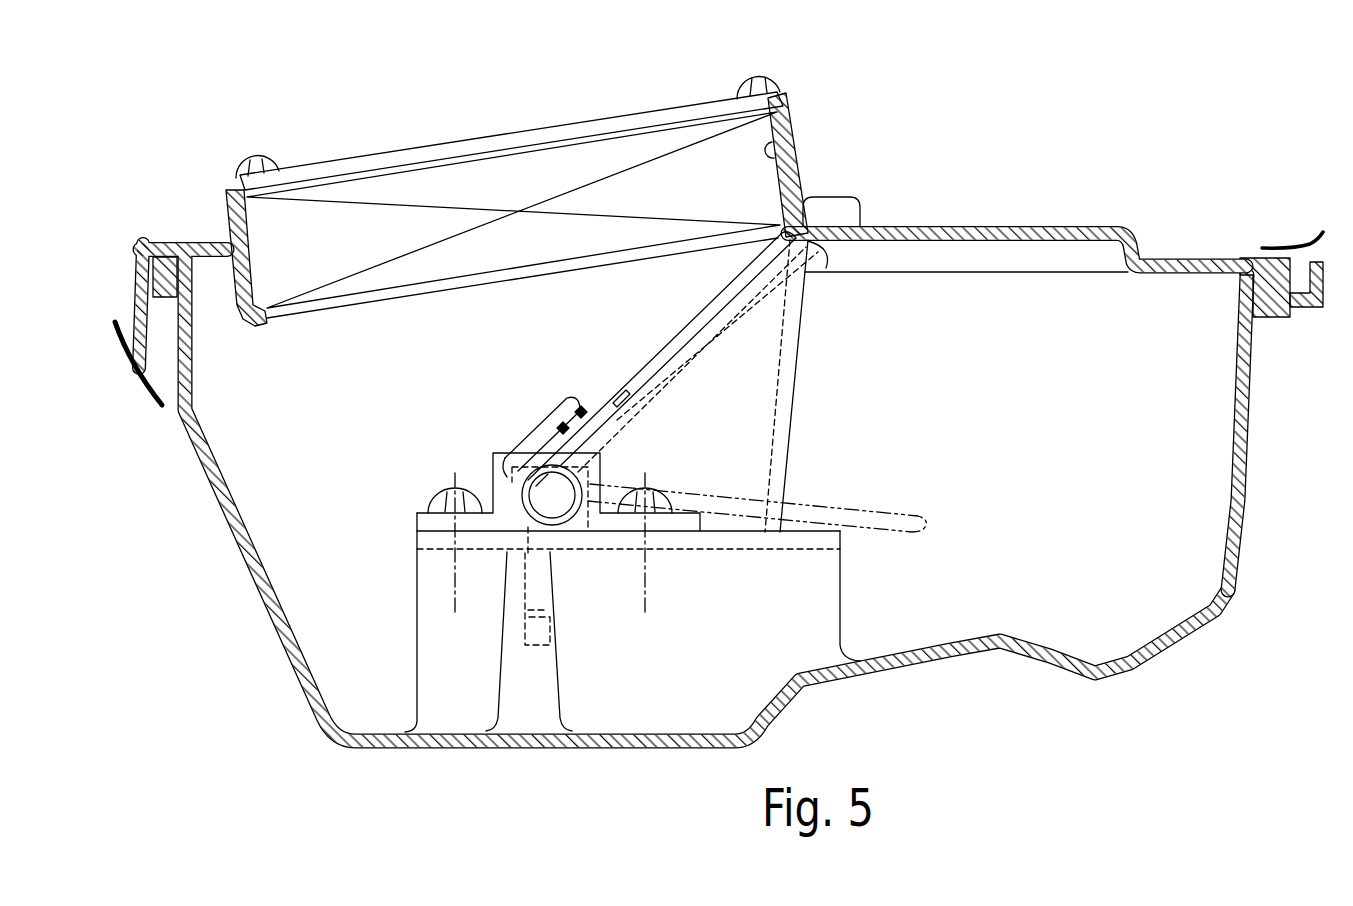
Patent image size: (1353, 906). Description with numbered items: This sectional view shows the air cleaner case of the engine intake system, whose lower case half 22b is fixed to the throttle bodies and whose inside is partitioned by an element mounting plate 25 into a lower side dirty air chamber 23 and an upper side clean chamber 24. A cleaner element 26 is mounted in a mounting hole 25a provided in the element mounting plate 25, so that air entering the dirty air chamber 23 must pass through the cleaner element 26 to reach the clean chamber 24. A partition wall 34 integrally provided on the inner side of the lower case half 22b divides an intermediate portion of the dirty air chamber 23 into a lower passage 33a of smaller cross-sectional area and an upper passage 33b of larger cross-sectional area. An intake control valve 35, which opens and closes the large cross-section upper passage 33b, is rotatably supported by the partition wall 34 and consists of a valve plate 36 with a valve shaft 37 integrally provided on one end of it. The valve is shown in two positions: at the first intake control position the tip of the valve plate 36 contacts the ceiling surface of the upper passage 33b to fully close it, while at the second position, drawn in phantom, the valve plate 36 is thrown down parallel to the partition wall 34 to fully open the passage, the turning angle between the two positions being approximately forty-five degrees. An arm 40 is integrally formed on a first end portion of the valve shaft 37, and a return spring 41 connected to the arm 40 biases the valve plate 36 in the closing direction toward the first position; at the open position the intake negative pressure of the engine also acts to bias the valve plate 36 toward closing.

The lower case half 22b is at (1238, 454).
The dirty air chamber 23 is at (1071, 425).
The clean chamber 24 is at (641, 45).
The element mounting plate 25 is at (990, 232).
The mounting hole 25a is at (788, 140).
The cleaner element 26 is at (490, 183).
The lower passage 33a is at (800, 600).
The upper passage 33b is at (762, 402).
The partition wall 34 is at (733, 582).
The intake control valve 35 is at (749, 382).
The valve plate 36 is at (668, 345).
The valve shaft 37 is at (537, 487).
The arm 40 is at (560, 412).
The return spring 41 is at (610, 416).